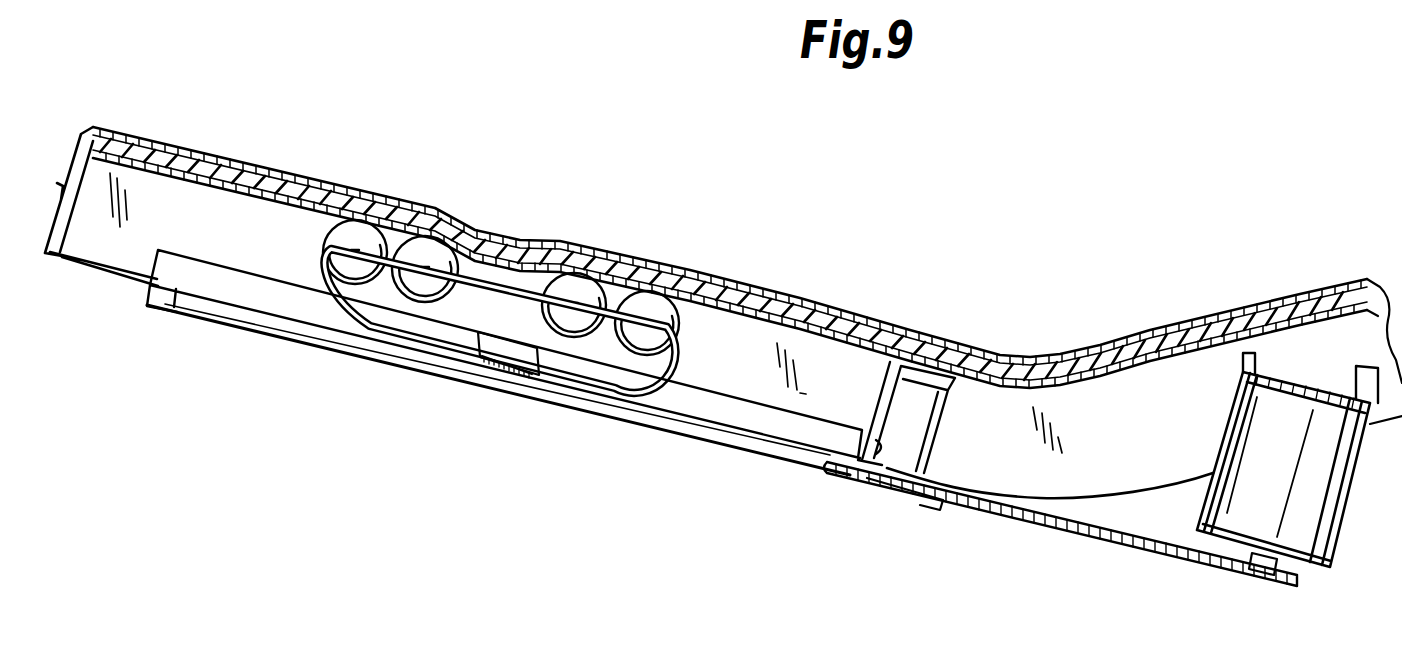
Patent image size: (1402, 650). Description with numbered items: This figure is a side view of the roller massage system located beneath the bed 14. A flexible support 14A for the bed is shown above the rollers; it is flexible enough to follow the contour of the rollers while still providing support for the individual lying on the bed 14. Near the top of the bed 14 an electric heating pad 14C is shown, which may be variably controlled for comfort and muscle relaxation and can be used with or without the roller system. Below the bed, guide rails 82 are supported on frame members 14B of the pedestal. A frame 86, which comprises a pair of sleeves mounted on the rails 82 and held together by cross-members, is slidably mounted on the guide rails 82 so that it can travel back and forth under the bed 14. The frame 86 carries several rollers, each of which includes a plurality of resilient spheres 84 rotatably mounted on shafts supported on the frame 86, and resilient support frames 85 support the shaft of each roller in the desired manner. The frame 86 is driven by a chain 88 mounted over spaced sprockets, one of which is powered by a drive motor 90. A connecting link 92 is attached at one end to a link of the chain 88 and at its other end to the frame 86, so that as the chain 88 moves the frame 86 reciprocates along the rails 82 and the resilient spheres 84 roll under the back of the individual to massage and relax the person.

The bed 14 is at (815, 305).
The support for the bed 14A is at (723, 327).
The frame members 14B is at (63, 218).
The electric heating pad 14C is at (557, 250).
The guide rails 82 is at (794, 434).
The resilient spheres 84 is at (322, 247).
The resilient support frames 85 is at (327, 284).
The frame 86 is at (567, 388).
The chain 88 is at (1097, 538).
The drive motor 90 is at (1335, 511).
The connecting link 92 is at (480, 392).